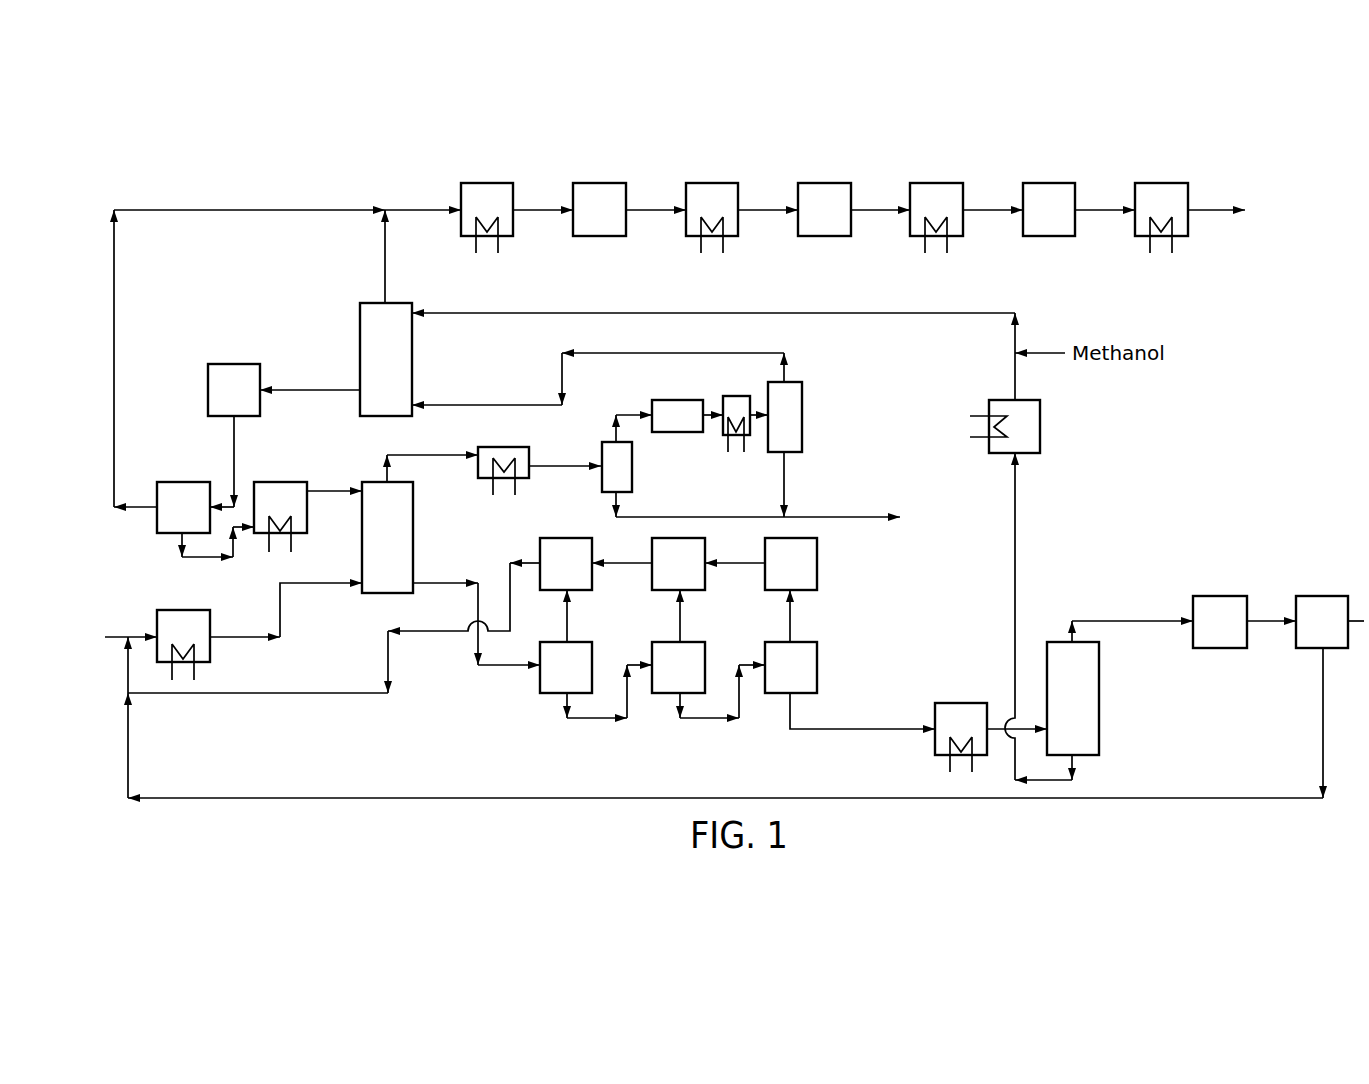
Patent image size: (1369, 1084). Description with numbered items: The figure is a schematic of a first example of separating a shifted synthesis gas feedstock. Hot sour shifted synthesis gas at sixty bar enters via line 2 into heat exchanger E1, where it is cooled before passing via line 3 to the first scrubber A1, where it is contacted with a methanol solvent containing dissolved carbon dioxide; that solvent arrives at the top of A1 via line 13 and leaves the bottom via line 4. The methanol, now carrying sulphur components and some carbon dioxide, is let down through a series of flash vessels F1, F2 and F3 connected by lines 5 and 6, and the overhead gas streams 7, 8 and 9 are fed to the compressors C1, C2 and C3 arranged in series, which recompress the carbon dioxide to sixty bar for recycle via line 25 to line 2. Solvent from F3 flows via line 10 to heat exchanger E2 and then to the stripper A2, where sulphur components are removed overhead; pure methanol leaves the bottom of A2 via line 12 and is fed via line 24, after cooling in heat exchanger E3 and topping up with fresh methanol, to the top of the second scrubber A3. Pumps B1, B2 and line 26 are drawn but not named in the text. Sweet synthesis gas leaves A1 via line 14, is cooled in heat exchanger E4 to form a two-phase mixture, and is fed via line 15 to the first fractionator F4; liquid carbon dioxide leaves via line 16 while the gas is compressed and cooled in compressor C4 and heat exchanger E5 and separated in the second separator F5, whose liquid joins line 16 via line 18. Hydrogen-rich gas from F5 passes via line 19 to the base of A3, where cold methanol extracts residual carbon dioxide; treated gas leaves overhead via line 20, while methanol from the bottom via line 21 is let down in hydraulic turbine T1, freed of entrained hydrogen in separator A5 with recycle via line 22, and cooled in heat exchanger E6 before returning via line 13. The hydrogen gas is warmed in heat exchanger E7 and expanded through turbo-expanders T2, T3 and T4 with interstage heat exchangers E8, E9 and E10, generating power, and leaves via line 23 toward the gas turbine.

The feed line 2 is at (131, 623).
The cooled feed line 3 is at (286, 596).
The methanol bottoms line 4 is at (476, 610).
The flash vessel interconnecting line 5 is at (609, 704).
The flash vessel interconnecting line 6 is at (722, 704).
The overhead gas stream 7 is at (577, 616).
The overhead gas stream 8 is at (690, 616).
The overhead gas stream 9 is at (800, 616).
The methanol solvent line 10 is at (862, 711).
The pure methanol line 12 is at (1027, 546).
The methanol feed line 13 is at (334, 477).
The sweet synthesis gas overhead line 14 is at (432, 455).
The two-phase mixture line 15 is at (565, 452).
The liquid carbon dioxide line 16 is at (798, 516).
The liquid carbon dioxide line 18 is at (802, 484).
The hydrogen-rich gas line 19 is at (598, 365).
The treated gas overhead line 20 is at (423, 256).
The methanol bottoms line 21 is at (310, 377).
The entrained hydrogen recycle line 22 is at (249, 358).
The hydrogen gas outlet line 23 is at (1269, 204).
The methanol return line 24 is at (713, 298).
The carbon dioxide recycle line 25 is at (258, 662).
The solvent return stream 26 is at (725, 723).
The heat exchanger E1 is at (183, 632).
The heat exchanger E2 is at (961, 725).
The heat exchanger E3 is at (1021, 426).
The heat exchanger E4 is at (503, 457).
The heat exchanger E5 is at (736, 409).
The heat exchanger E6 is at (280, 504).
The heat exchanger E7 is at (487, 205).
The interstage heat exchanger E8 is at (712, 205).
The interstage heat exchanger E9 is at (936, 205).
The interstage heat exchanger E10 is at (1161, 205).
The hydraulic turbine T1 is at (234, 375).
The turbo-expander T2 is at (599, 197).
The turbo-expander T3 is at (824, 197).
The turbo-expander T4 is at (1049, 197).
The first scrubber A1 is at (404, 537).
The stripper A2 is at (1089, 698).
The second scrubber A3 is at (402, 359).
The separator A5 is at (183, 494).
The pump B1 is at (1220, 609).
The pump B2 is at (1322, 609).
The compressor C1 is at (566, 551).
The compressor C2 is at (694, 558).
The compressor C3 is at (807, 564).
The compressor C4 is at (677, 403).
The flash vessel F1 is at (581, 657).
The flash vessel F2 is at (693, 657).
The flash vessel F3 is at (805, 667).
The first fractionator F4 is at (633, 467).
The second separator F5 is at (800, 417).